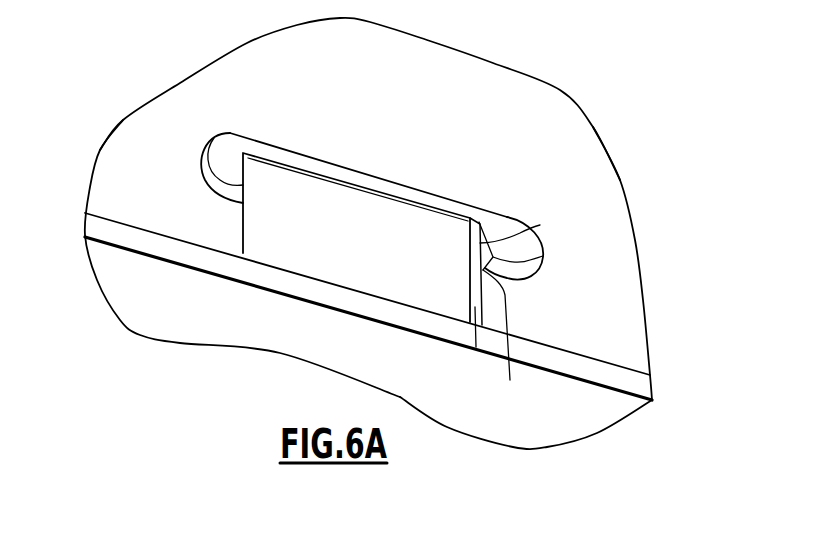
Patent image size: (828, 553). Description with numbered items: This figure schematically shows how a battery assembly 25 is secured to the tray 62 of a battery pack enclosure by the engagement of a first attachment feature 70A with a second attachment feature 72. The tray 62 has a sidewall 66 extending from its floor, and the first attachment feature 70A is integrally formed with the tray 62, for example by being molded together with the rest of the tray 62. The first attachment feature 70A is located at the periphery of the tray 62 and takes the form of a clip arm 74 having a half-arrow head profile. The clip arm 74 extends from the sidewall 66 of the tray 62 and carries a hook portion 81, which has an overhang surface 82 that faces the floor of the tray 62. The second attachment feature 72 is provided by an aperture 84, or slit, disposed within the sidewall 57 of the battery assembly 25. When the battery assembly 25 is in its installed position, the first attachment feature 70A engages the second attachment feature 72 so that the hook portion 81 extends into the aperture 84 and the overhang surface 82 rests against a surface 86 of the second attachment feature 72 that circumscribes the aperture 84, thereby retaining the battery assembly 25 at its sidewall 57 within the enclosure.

The battery assembly 25 is at (568, 111).
The sidewall 57 is at (263, 62).
The tray 62 is at (184, 352).
The sidewall 66 is at (547, 430).
The first attachment feature 70A is at (256, 232).
The second attachment feature 72 is at (218, 160).
The clip arm 74 is at (476, 347).
The hook portion 81 is at (540, 225).
The overhang surface 82 is at (510, 367).
The aperture 84 is at (496, 224).
The surface 86 is at (509, 271).